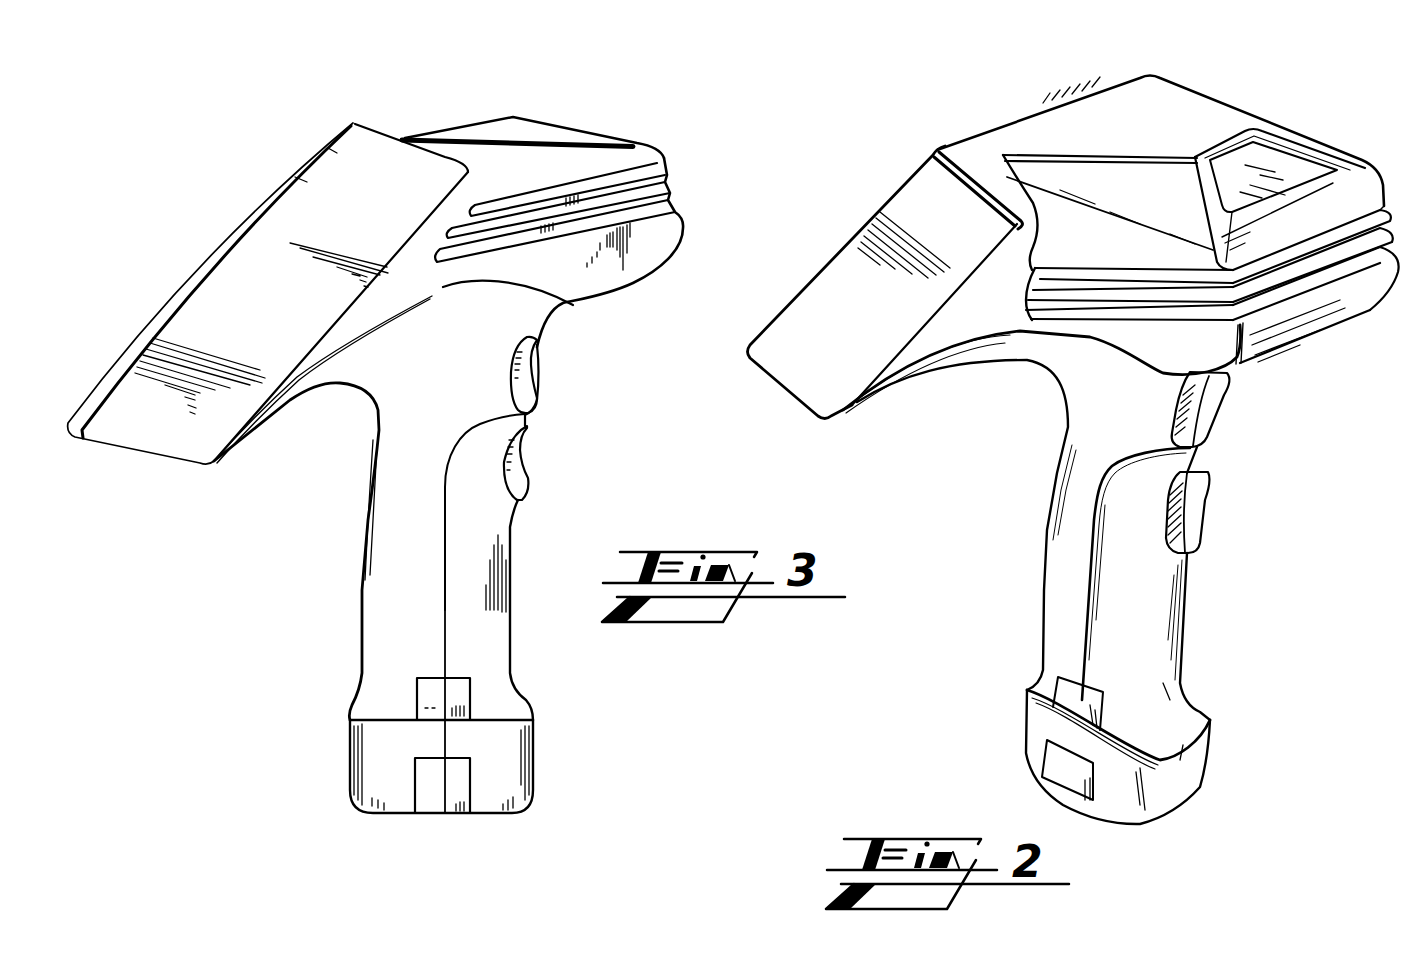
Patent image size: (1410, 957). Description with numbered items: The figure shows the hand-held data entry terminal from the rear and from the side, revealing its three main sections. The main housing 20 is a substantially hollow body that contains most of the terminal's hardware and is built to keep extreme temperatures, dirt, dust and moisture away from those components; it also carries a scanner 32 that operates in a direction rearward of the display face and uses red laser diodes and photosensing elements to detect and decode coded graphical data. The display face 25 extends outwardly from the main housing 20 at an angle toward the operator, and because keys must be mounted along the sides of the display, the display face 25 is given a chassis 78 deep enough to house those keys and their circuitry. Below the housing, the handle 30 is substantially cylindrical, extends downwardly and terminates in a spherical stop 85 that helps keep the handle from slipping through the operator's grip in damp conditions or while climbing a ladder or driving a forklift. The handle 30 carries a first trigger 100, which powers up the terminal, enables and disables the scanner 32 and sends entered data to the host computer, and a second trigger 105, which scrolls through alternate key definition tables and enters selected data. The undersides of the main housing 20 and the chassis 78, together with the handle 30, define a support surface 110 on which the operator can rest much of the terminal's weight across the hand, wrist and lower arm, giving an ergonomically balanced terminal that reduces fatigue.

In FIG. 3, the main housing 20 is at (543, 167).
In FIG. 3, the display face 25 is at (226, 237).
In FIG. 2, the display face 25 is at (890, 198).
In FIG. 3, the handle 30 is at (383, 600).
In FIG. 2, the handle 30 is at (1172, 640).
In FIG. 2, the scanner 32 is at (1270, 173).
In FIG. 3, the chassis 78 is at (148, 428).
In FIG. 2, the chassis 78 is at (838, 350).
In FIG. 3, the spherical stop 85 is at (362, 785).
In FIG. 2, the spherical stop 85 is at (1180, 787).
In FIG. 3, the first data entry control trigger 100 is at (530, 367).
In FIG. 2, the first data entry control trigger 100 is at (1215, 402).
In FIG. 3, the second data entry control trigger 105 is at (522, 462).
In FIG. 2, the second data entry control trigger 105 is at (1195, 507).
In FIG. 3, the support surface 110 is at (338, 406).
In FIG. 2, the support surface 110 is at (1021, 392).